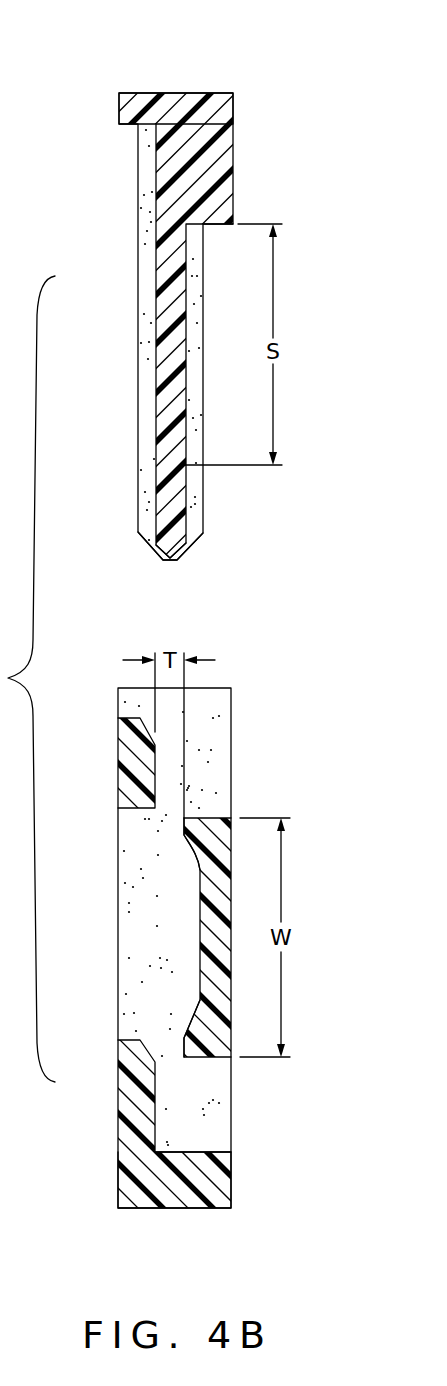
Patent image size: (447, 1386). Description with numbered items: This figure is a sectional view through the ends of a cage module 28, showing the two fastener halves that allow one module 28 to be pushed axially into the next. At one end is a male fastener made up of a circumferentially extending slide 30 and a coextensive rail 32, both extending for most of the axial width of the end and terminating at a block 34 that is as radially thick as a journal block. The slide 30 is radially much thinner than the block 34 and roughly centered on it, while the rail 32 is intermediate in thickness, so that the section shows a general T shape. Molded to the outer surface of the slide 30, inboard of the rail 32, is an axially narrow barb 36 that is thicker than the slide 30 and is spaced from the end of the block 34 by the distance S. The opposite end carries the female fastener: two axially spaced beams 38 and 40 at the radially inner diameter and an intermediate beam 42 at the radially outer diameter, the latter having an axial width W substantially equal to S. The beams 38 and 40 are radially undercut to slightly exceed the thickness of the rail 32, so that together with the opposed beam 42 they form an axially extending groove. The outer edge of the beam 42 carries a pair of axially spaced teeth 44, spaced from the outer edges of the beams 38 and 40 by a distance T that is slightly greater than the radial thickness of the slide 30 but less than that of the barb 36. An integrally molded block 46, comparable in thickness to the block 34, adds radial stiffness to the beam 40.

The cage module 28 is at (244, 118).
The slide 30 is at (177, 358).
The rail 32 is at (200, 317).
The block 34 is at (190, 100).
The barb 36 is at (192, 475).
The beam 38 is at (128, 742).
The beam 40 is at (140, 1113).
The intermediate beam 42 is at (210, 938).
The tooth 44 is at (200, 832).
The block 46 is at (208, 1185).